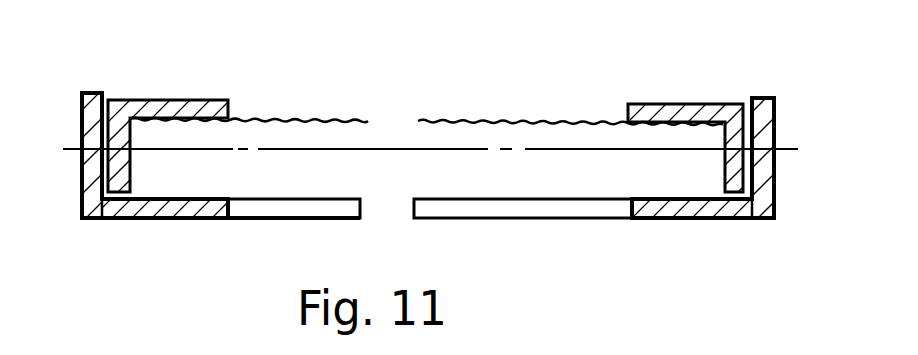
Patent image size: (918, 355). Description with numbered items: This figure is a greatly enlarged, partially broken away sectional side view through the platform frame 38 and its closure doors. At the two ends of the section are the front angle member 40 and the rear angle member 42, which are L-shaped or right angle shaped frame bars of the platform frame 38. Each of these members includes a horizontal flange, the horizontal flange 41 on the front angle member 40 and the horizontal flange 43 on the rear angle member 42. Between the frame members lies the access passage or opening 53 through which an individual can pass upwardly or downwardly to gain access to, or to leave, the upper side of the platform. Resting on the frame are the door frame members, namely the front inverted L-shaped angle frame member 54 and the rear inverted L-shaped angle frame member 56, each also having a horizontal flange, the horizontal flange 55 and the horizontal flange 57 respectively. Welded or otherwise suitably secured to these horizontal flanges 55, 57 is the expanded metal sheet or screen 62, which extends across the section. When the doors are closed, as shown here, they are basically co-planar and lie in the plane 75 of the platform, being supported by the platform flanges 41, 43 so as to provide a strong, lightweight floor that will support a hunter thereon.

The platform frame 38 is at (101, 238).
The front angle member 40 is at (66, 214).
The horizontal flange 41 is at (183, 220).
The rear angle member 42 is at (793, 194).
The horizontal flange 43 is at (667, 220).
The access passage or opening 53 is at (535, 220).
The front inverted L-shaped angle frame member 54 is at (115, 68).
The horizontal flange 55 is at (172, 100).
The rear inverted L-shaped angle frame member 56 is at (714, 68).
The horizontal flange 57 is at (647, 103).
The expanded metal sheet or screen 62 is at (265, 118).
The plane 75 is at (786, 149).